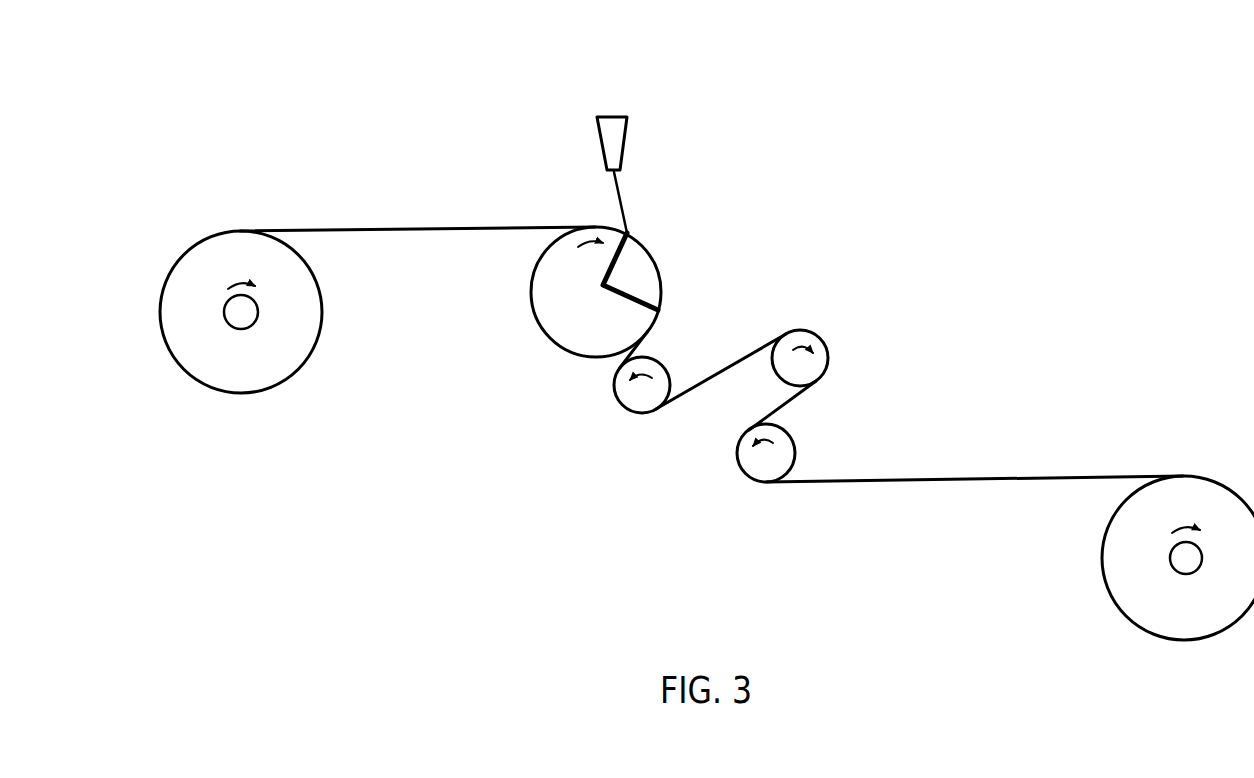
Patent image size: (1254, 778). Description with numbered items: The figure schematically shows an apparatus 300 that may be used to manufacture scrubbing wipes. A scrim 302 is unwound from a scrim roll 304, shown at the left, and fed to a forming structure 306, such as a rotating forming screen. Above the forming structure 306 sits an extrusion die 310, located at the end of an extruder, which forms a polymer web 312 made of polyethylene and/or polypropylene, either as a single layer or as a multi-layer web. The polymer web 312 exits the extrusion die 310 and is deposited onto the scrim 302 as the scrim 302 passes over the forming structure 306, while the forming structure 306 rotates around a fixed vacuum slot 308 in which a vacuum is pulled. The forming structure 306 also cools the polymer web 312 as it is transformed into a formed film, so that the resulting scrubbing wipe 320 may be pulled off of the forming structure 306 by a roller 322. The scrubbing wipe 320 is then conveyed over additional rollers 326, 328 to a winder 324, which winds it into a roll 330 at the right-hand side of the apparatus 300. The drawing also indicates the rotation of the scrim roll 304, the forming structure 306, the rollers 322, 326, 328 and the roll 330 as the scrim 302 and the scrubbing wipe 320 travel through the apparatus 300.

The apparatus 300 is at (237, 50).
The scrim 302 is at (402, 228).
The scrim roll 304 is at (160, 312).
The forming structure 306 is at (547, 338).
The fixed vacuum slot 308 is at (638, 273).
The extrusion die 310 is at (627, 143).
The polymer web 312 is at (622, 202).
The scrubbing wipe 320 is at (982, 476).
The roller 322 is at (660, 360).
The winder 324 is at (1176, 568).
The roller 326 is at (815, 320).
The roller 328 is at (790, 430).
The roll 330 is at (1103, 532).